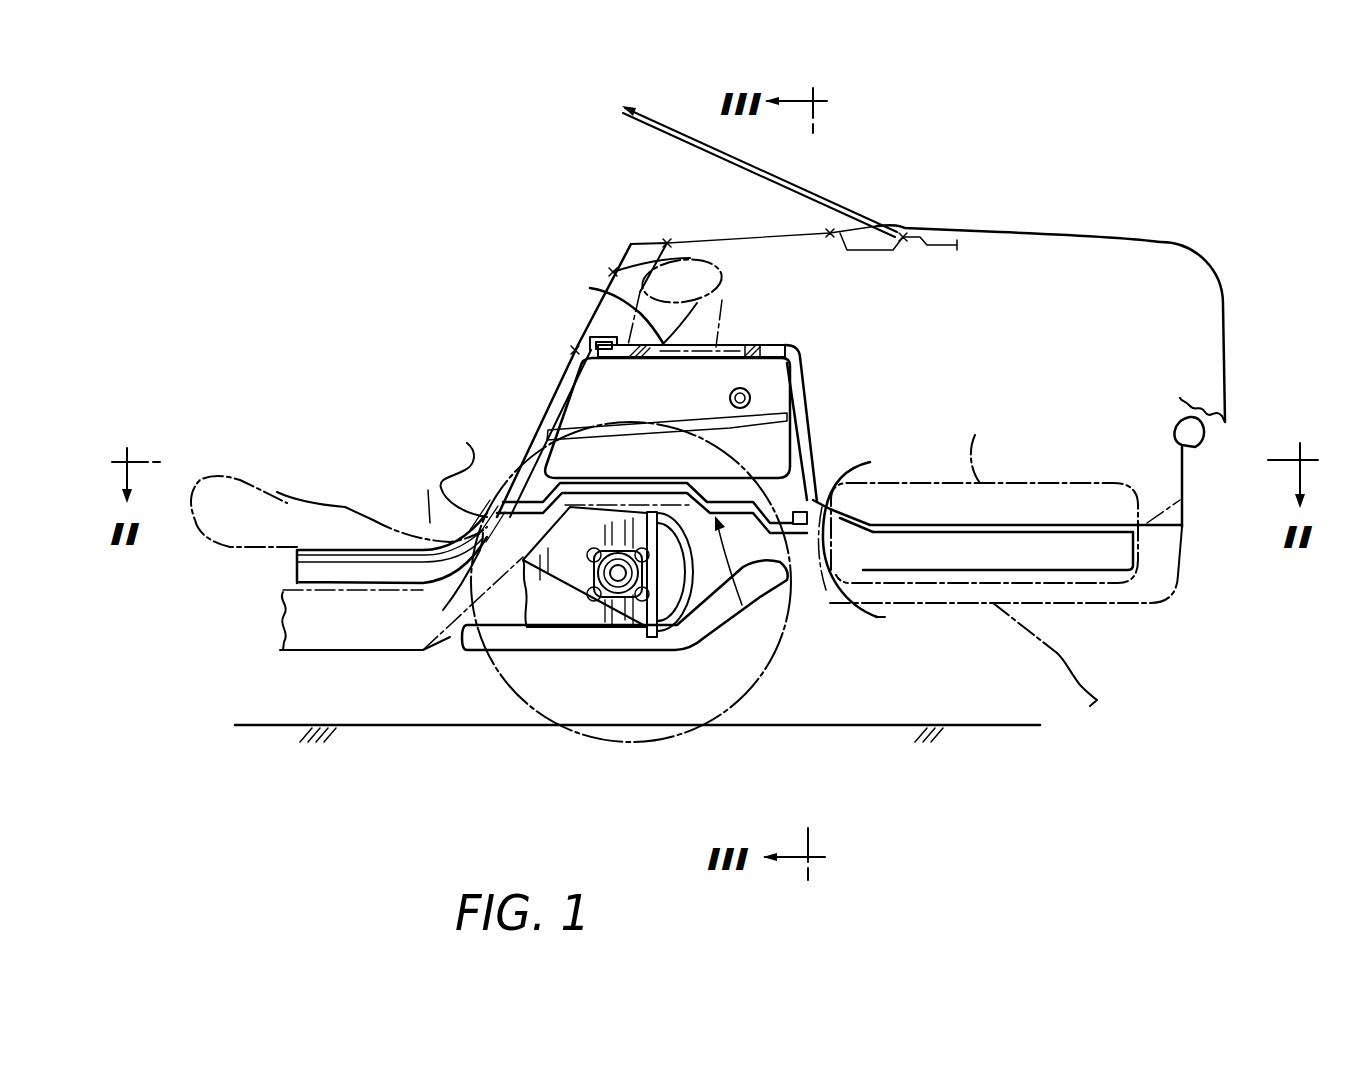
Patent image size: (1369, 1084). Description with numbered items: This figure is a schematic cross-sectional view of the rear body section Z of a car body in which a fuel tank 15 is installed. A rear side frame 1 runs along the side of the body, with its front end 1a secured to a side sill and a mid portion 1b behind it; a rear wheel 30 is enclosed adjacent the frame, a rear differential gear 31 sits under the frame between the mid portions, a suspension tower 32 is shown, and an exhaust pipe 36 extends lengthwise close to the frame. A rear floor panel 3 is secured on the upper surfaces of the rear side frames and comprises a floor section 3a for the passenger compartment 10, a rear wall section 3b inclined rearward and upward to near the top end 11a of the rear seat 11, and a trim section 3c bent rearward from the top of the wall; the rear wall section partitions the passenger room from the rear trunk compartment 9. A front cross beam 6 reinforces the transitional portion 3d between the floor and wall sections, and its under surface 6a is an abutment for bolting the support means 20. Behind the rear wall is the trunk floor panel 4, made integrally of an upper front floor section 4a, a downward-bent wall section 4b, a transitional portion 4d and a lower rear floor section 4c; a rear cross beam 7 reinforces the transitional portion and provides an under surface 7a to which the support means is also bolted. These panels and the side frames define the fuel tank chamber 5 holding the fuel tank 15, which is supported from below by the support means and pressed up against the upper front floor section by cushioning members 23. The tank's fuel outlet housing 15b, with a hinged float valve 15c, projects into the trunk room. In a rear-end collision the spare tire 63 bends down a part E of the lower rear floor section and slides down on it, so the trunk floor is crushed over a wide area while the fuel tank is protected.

The rear side frame 1 is at (930, 583).
The front end 1a is at (367, 623).
The mid portion 1b is at (590, 288).
The rear floor panel 3 is at (528, 411).
The floor section 3a is at (353, 547).
The rear wall section 3b is at (613, 272).
The trim section 3c is at (695, 242).
The transitional portion 3d is at (467, 533).
The trunk floor panel 4 is at (822, 420).
The upper front floor section 4a is at (720, 347).
The wall section 4b is at (800, 383).
The lower rear floor section 4c is at (1038, 525).
The transitional portion 4d is at (850, 513).
The fuel tank chamber 5 is at (793, 385).
The front cross beam 6 is at (467, 443).
The under surface 6a is at (443, 610).
The rear cross beam 7 is at (870, 462).
The under surface 7a is at (877, 617).
The rear trunk compartment 9 is at (1108, 365).
The passenger compartment 10 is at (328, 325).
The rear seat 11 is at (268, 482).
The top end 11a is at (668, 243).
The fuel tank 15 is at (775, 460).
The fuel outlet housing 15b is at (595, 350).
The float valve 15c is at (572, 350).
The support means 20 is at (760, 600).
The cushioning member 23 is at (750, 352).
The rear wheel 30 is at (757, 660).
The rear differential gear 31 is at (507, 673).
The suspension tower 32 is at (725, 292).
The exhaust pipe 36 is at (587, 650).
The spare tire 63 is at (975, 435).
The part of the lower rear floor section E is at (1065, 668).
The rear body section Z is at (1122, 164).